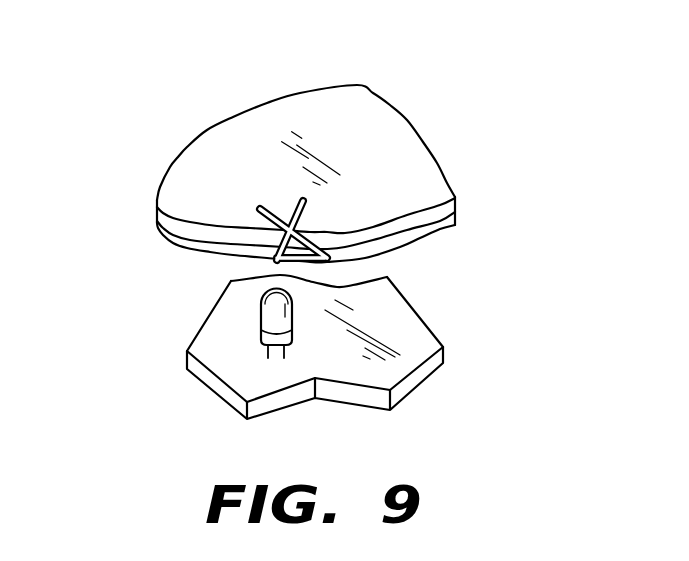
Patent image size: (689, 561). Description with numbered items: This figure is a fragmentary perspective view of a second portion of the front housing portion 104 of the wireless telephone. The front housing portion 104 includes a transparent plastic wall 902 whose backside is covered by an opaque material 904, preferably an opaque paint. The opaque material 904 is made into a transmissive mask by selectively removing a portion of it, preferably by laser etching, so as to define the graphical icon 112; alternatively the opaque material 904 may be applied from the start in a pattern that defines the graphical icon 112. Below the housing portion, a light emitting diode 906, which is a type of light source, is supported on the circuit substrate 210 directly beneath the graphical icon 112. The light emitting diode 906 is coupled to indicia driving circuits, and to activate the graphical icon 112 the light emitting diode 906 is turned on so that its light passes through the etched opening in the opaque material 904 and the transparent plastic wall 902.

The front housing portion 104 is at (357, 85).
The graphical icon 112 is at (303, 203).
The transparent plastic wall 902 is at (443, 163).
The opaque material 904 is at (445, 232).
The light emitting diode 906 is at (263, 315).
The circuit substrate 210 is at (428, 338).